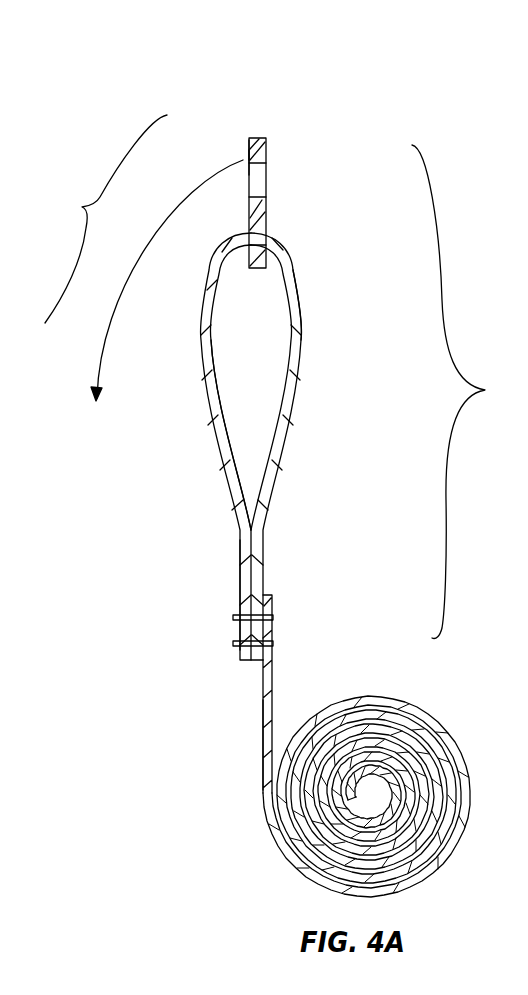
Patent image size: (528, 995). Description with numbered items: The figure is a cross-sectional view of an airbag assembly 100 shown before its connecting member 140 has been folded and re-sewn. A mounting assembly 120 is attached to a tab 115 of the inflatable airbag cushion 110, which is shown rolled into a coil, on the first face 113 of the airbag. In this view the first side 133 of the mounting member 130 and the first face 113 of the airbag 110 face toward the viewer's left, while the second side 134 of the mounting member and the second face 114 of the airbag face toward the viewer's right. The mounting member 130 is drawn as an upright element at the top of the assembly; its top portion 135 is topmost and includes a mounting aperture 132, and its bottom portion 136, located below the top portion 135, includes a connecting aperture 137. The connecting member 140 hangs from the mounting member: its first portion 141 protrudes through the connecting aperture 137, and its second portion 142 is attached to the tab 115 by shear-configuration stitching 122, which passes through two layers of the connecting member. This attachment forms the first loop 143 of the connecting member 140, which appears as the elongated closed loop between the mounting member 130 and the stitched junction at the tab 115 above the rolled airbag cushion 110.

The airbag assembly 100 is at (469, 392).
The inflatable airbag cushion 110 is at (437, 710).
The first face 113 is at (264, 706).
The second face 114 is at (272, 675).
The tab 115 is at (270, 603).
The mounting assembly 120 is at (144, 258).
The shear-configuration stitching 122 is at (233, 643).
The mounting member 130 is at (259, 128).
The mounting aperture 132 is at (260, 182).
The first side 133 is at (249, 153).
The second side 134 is at (267, 153).
The top portion 135 is at (249, 151).
The bottom portion 136 is at (248, 267).
The connecting aperture 137 is at (250, 232).
The connecting member 140 is at (305, 420).
The first portion 141 is at (295, 282).
The second portion 142 is at (263, 565).
The first loop 143 is at (260, 337).